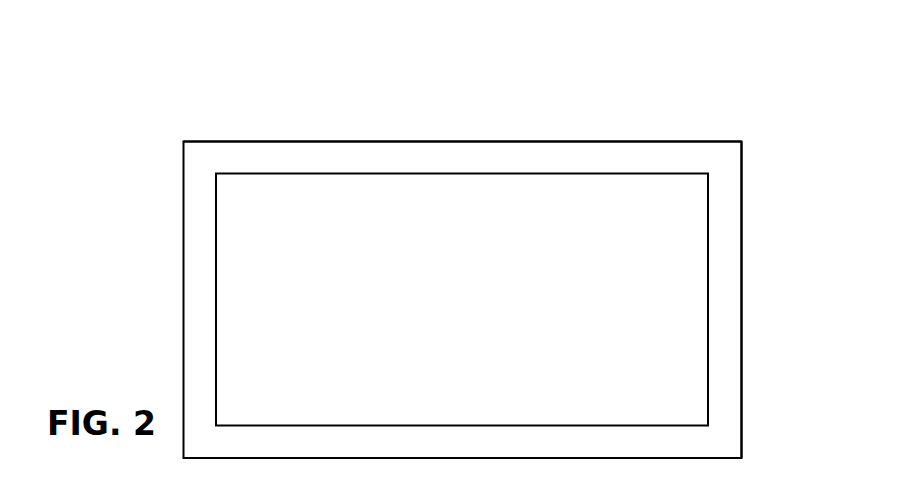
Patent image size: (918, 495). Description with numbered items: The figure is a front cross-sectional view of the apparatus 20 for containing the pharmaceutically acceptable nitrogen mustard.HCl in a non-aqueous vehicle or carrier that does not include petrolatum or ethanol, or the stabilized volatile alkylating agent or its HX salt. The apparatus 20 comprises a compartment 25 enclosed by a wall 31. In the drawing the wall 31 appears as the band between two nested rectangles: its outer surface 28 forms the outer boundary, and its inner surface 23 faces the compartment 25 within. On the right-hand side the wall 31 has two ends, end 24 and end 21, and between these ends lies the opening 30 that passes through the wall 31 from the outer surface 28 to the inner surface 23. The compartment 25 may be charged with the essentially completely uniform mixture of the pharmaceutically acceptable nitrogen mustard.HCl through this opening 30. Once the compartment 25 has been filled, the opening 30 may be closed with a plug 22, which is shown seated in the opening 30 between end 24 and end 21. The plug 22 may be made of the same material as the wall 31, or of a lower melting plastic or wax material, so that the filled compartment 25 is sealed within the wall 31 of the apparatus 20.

The apparatus 20 is at (140, 183).
The end 21 is at (708, 300).
The plug 22 is at (725, 288).
The inner surface 23 is at (570, 174).
The end 24 is at (761, 300).
The compartment 25 is at (483, 296).
The outer surface 28 is at (385, 141).
The opening 30 is at (742, 294).
The wall 31 is at (503, 158).